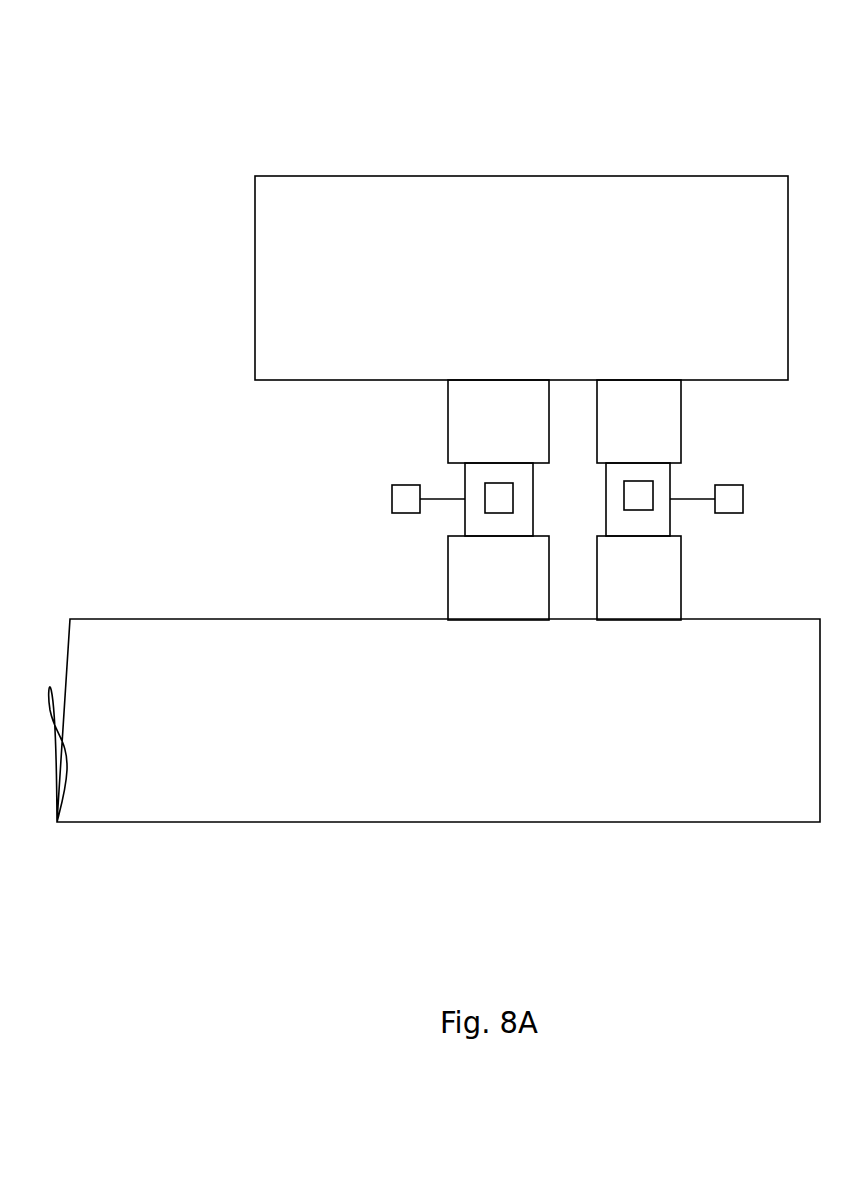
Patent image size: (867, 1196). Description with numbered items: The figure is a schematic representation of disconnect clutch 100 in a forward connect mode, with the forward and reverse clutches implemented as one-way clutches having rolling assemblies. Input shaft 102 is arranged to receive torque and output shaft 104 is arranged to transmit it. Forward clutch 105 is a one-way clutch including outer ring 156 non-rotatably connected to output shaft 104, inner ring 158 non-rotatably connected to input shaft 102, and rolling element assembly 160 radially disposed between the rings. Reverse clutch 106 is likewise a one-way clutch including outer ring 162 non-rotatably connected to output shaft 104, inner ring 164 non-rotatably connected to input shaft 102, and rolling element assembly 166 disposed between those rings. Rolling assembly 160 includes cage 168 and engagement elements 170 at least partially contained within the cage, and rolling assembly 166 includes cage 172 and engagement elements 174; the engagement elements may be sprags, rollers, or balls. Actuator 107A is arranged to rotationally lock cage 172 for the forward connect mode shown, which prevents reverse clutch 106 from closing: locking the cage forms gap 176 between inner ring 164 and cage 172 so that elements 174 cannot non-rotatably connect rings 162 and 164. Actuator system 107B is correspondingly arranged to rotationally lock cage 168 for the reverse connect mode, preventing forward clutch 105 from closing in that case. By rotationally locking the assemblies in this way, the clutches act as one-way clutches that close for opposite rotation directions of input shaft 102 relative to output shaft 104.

The disconnect clutch 100 is at (711, 95).
The input shaft 102 is at (490, 731).
The output shaft 104 is at (562, 293).
The forward clutch 105 is at (430, 437).
The reverse clutch 106 is at (698, 437).
The actuator 107A is at (392, 499).
The actuator system 107B is at (745, 499).
The outer ring 156 is at (448, 400).
The inner ring 158 is at (448, 578).
The rolling element assembly 160 is at (458, 476).
The outer ring 162 is at (681, 400).
The inner ring 164 is at (681, 578).
The rolling element assembly 166 is at (677, 476).
The cage 168 is at (465, 520).
The engagement elements 170 is at (503, 502).
The cage 172 is at (670, 520).
The engagement elements 174 is at (638, 492).
The gap 176 is at (672, 532).